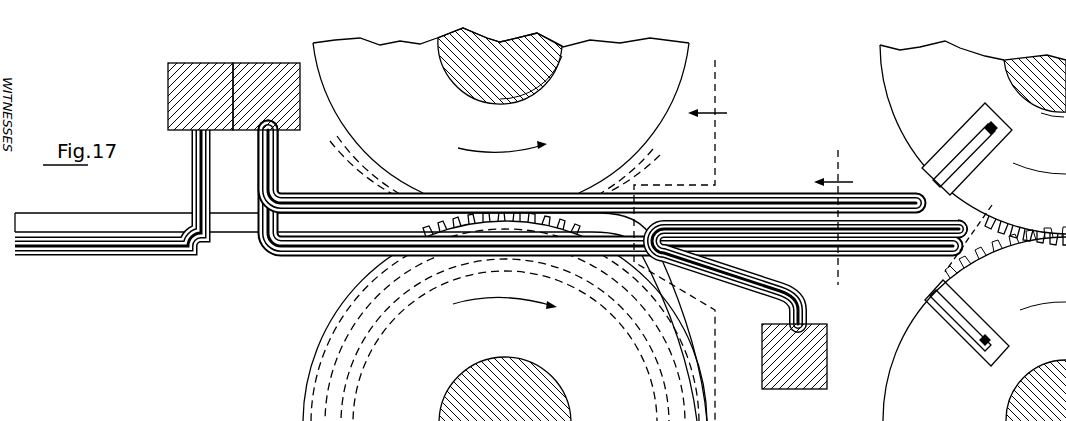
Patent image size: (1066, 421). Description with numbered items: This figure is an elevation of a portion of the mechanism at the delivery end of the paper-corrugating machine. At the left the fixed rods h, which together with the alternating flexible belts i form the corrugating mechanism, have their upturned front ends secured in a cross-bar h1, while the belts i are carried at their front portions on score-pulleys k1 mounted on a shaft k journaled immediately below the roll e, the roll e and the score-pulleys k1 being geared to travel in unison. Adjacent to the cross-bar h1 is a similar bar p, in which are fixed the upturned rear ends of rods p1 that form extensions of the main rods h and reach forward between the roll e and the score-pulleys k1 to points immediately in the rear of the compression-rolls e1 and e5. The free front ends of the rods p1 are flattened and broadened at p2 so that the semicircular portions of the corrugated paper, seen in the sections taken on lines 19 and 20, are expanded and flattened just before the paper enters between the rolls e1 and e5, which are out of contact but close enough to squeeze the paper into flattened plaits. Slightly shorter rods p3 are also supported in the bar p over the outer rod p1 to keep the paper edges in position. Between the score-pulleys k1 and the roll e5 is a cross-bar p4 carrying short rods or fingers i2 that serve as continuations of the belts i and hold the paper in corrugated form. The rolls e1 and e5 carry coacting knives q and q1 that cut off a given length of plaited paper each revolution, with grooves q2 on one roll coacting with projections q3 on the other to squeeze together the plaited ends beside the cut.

The cross-bar h1 is at (213, 88).
The bar p is at (274, 82).
The flexible belts i is at (138, 213).
The fixed rods h is at (153, 246).
The rods p1 is at (290, 247).
The score-pulleys k1 is at (318, 380).
The shaft k is at (527, 407).
The roll e is at (501, 114).
The section line 19 is at (680, 238).
The rods p3 is at (758, 210).
The section line 20 is at (837, 220).
The grooves q2 is at (921, 169).
The knife q1 is at (935, 181).
The flattened and broadened ends p2 is at (950, 223).
The roll e1 is at (973, 143).
The short rods or fingers i2 is at (802, 228).
The knife q is at (935, 290).
The projections q3 is at (925, 301).
The cross-bar p4 is at (800, 368).
The roll e5 is at (974, 324).